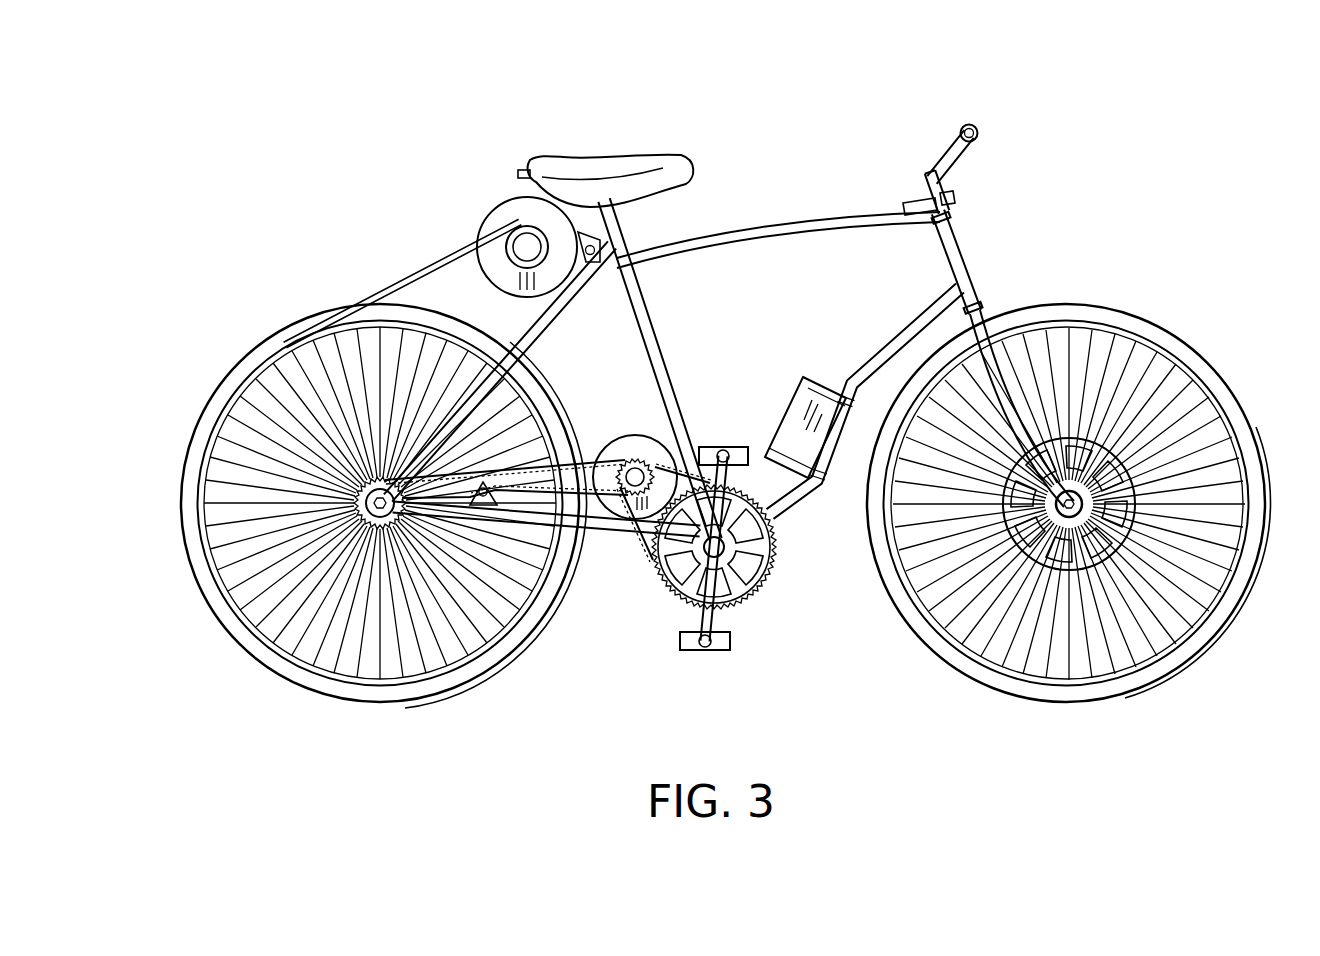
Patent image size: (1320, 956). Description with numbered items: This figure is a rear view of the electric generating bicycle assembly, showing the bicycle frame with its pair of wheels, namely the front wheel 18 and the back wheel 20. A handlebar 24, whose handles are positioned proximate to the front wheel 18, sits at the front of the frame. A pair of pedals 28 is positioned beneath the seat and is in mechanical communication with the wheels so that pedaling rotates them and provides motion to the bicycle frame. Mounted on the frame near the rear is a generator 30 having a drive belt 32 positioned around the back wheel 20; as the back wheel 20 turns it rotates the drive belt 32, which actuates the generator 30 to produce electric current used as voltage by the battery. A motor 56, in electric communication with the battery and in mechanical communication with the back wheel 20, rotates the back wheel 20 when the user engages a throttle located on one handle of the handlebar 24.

The front wheel 18 is at (1212, 397).
The back wheel 20 is at (200, 450).
The handlebar 24 is at (972, 125).
The pair of pedals 28 is at (707, 650).
The generator 30 is at (495, 205).
The drive belt 32 is at (427, 270).
The motor 56 is at (627, 440).